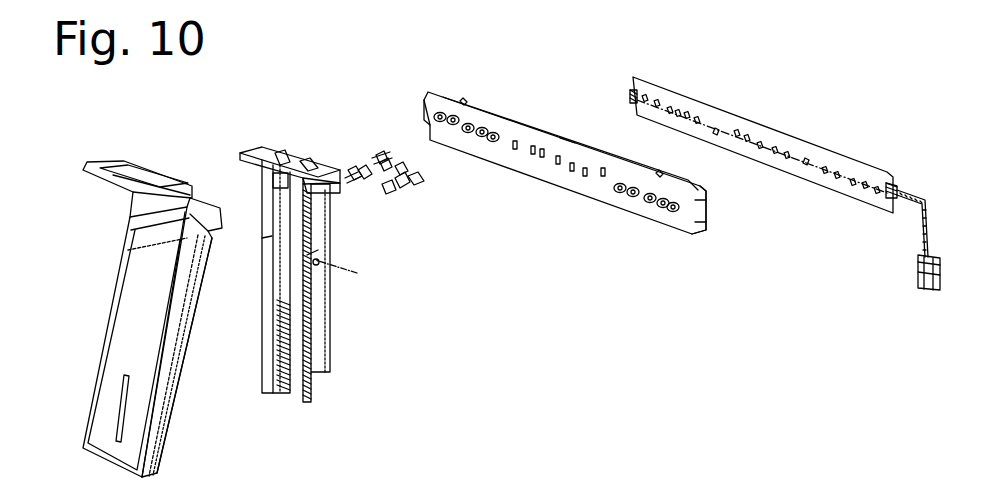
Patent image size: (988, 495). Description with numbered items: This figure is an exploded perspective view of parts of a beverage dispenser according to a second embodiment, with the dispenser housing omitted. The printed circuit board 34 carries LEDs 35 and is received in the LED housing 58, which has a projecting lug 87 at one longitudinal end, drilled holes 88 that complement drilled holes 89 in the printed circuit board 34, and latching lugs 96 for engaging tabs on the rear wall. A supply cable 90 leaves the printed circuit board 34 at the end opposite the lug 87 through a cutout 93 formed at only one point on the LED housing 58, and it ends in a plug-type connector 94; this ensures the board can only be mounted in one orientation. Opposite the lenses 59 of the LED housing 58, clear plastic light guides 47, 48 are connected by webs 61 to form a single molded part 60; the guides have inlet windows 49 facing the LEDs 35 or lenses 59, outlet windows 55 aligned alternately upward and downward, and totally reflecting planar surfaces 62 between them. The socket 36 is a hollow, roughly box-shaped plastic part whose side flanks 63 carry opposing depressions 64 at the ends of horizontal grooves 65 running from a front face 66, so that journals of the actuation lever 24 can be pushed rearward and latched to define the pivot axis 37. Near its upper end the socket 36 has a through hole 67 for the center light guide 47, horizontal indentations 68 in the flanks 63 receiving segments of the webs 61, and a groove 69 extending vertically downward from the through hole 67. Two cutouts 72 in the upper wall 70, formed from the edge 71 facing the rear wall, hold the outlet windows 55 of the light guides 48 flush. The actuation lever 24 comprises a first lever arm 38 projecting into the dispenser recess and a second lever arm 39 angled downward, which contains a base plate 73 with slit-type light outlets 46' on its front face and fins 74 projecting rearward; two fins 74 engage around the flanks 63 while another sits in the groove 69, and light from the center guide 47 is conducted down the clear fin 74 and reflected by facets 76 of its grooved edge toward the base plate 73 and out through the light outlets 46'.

The actuation lever 24 is at (105, 132).
The printed circuit board 34 is at (745, 120).
The LEDs 35 is at (697, 124).
The socket 36 is at (213, 128).
The axis 37 is at (337, 268).
The first lever arm 38 is at (112, 190).
The second lever arm 39 is at (90, 318).
The light outlets 46' is at (99, 403).
The light guides 47 is at (357, 170).
The light guides 48 is at (408, 160).
The inlet windows 49 is at (435, 187).
The outlet windows 55 is at (407, 203).
The LED housing 58 is at (527, 123).
The lenses 59 is at (573, 170).
The molded part 60 is at (335, 105).
The webs 61 is at (375, 160).
The totally reflecting planar surfaces 62 is at (353, 170).
The side flanks 63 is at (257, 315).
The depressions 64 is at (317, 263).
The groove 65 is at (258, 240).
The front face 66 is at (262, 232).
The through hole 67 is at (287, 186).
The indentation 68 is at (318, 193).
The groove 69 is at (280, 270).
The upper wall 70 is at (265, 151).
The edge 71 is at (287, 158).
The cutouts 72 is at (323, 165).
The base plate 73 is at (118, 348).
The fins 74 is at (173, 375).
The facets 76 is at (177, 413).
The projecting lug 87 is at (426, 110).
The drilled holes 88 is at (512, 148).
The drilled holes 89 is at (717, 130).
The supply cable 90 is at (910, 200).
The cutout 93 is at (703, 213).
The plug-type connector 94 is at (922, 273).
The latching lugs 96 is at (568, 142).